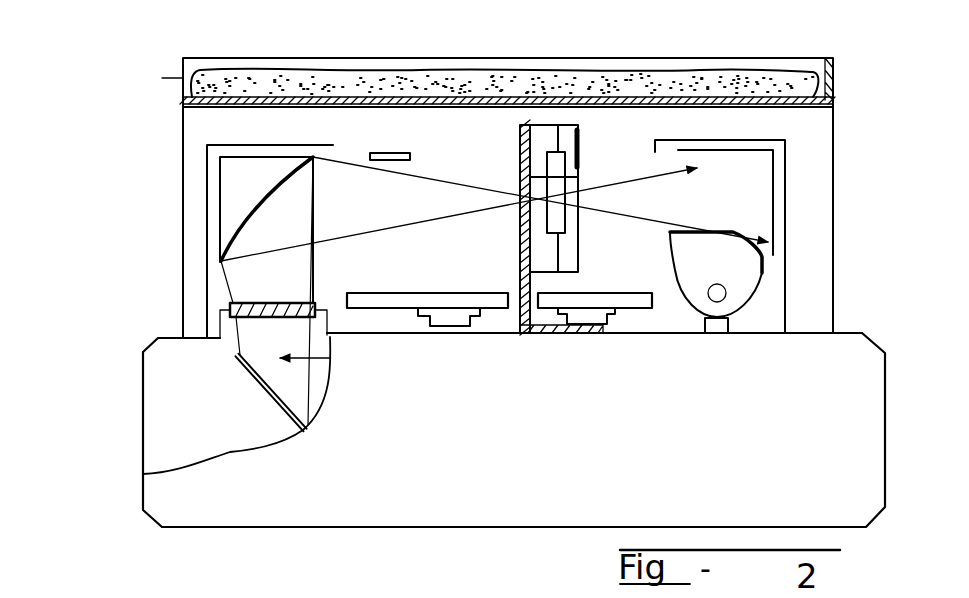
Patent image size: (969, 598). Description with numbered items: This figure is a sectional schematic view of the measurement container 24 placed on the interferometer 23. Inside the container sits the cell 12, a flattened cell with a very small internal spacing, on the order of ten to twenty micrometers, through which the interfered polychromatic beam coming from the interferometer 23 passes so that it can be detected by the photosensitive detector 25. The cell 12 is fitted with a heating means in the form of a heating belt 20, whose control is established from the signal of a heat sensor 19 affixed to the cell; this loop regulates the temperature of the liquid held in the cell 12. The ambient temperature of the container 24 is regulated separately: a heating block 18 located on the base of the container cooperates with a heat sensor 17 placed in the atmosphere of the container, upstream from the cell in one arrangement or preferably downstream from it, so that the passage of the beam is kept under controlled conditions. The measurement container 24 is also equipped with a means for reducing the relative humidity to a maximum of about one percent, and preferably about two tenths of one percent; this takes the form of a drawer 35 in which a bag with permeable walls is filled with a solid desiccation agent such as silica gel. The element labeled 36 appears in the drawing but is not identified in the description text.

The cell 12 is at (582, 167).
The heat sensor 17 is at (388, 153).
The heating block 18 is at (582, 303).
The heat sensor 19 is at (585, 158).
The heating belt 20 is at (550, 153).
The interferometer 23 is at (210, 405).
The measurement container 24 is at (165, 172).
The photosensitive detector 25 is at (724, 288).
The drawer 35 is at (183, 62).
The insulation layer 36 is at (270, 76).